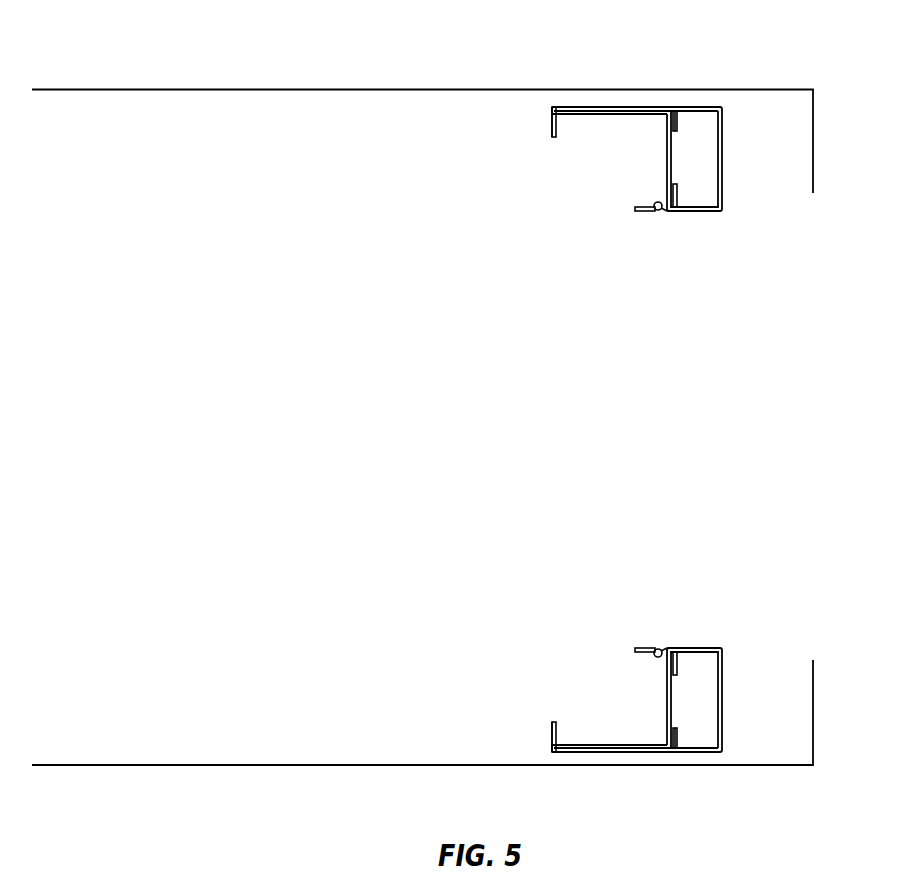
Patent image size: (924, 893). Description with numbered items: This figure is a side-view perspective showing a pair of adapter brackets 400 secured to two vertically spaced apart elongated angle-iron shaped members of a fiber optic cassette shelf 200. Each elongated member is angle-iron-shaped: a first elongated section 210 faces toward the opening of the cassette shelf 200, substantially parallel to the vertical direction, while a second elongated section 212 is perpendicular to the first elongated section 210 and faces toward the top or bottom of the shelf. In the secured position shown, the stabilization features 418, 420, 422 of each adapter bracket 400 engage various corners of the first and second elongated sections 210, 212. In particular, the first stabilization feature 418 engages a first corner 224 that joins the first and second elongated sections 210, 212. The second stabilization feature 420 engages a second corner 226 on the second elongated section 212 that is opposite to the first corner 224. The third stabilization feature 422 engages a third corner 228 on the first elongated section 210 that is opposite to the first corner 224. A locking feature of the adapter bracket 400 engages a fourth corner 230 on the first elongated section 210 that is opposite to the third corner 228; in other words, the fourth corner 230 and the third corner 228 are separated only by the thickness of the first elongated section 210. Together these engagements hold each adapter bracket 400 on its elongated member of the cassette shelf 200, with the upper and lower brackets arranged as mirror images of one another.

The cassette shelf 200 is at (575, 237).
The first elongated section 210 is at (672, 160).
The second elongated section 212 is at (605, 115).
The first corner 224 is at (682, 121).
The second corner 226 is at (550, 111).
The third corner 228 is at (674, 214).
The fourth corner 230 is at (660, 214).
The adapter bracket 400 is at (745, 151).
The first stabilization feature 418 is at (680, 114).
The second stabilization feature 420 is at (550, 124).
The third stabilization feature 422 is at (677, 195).